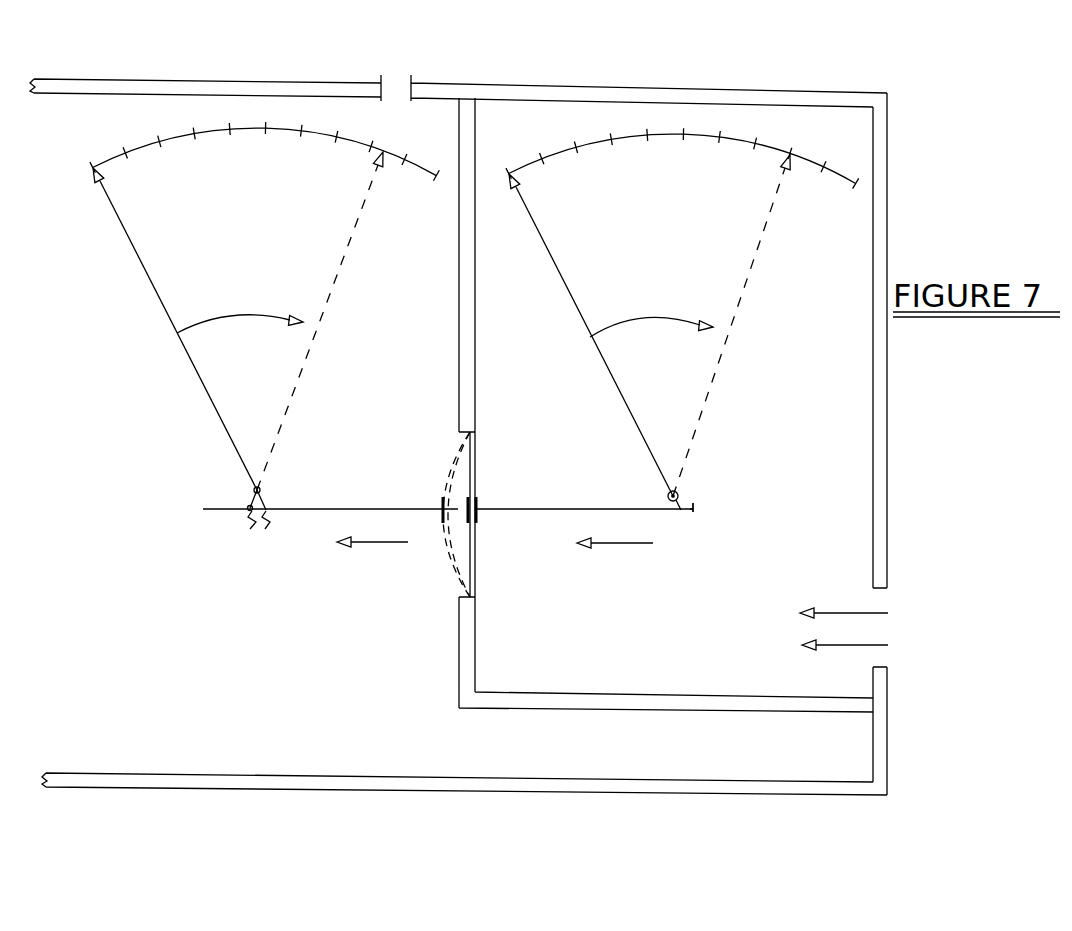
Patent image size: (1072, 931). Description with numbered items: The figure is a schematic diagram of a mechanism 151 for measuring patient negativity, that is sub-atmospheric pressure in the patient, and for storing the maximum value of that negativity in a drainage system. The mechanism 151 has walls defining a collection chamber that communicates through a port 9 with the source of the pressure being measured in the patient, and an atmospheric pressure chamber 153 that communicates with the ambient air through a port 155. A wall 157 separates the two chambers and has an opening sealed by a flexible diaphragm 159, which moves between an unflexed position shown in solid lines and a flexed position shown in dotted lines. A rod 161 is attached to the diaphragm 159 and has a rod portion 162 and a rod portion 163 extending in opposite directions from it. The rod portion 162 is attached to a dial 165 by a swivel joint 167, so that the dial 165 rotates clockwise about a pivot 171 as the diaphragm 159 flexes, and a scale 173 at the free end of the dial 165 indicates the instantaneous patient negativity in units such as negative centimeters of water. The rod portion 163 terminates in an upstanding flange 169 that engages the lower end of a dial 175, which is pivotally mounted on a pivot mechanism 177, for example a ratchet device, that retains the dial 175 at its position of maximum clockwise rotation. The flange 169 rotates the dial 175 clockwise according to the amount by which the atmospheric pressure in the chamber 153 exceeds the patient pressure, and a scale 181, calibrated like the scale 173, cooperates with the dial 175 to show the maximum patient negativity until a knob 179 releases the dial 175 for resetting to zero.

The port 9 is at (390, 93).
The mechanism 151 is at (203, 598).
The atmospheric pressure chamber 153 is at (716, 652).
The port 155 is at (880, 661).
The wall 157 is at (472, 672).
The diaphragm 159 is at (478, 543).
The rod 161 is at (287, 497).
The rod portion 162 is at (330, 509).
The rod portion 163 is at (532, 509).
The dial 165 is at (163, 310).
The swivel joint 167 is at (234, 530).
The upstanding flange 169 is at (700, 513).
The pivot 171 is at (254, 490).
The scale 173 is at (103, 122).
The dial 175 is at (585, 337).
The pivot mechanism 177 is at (685, 485).
The knob 179 is at (666, 495).
The scale 181 is at (598, 132).